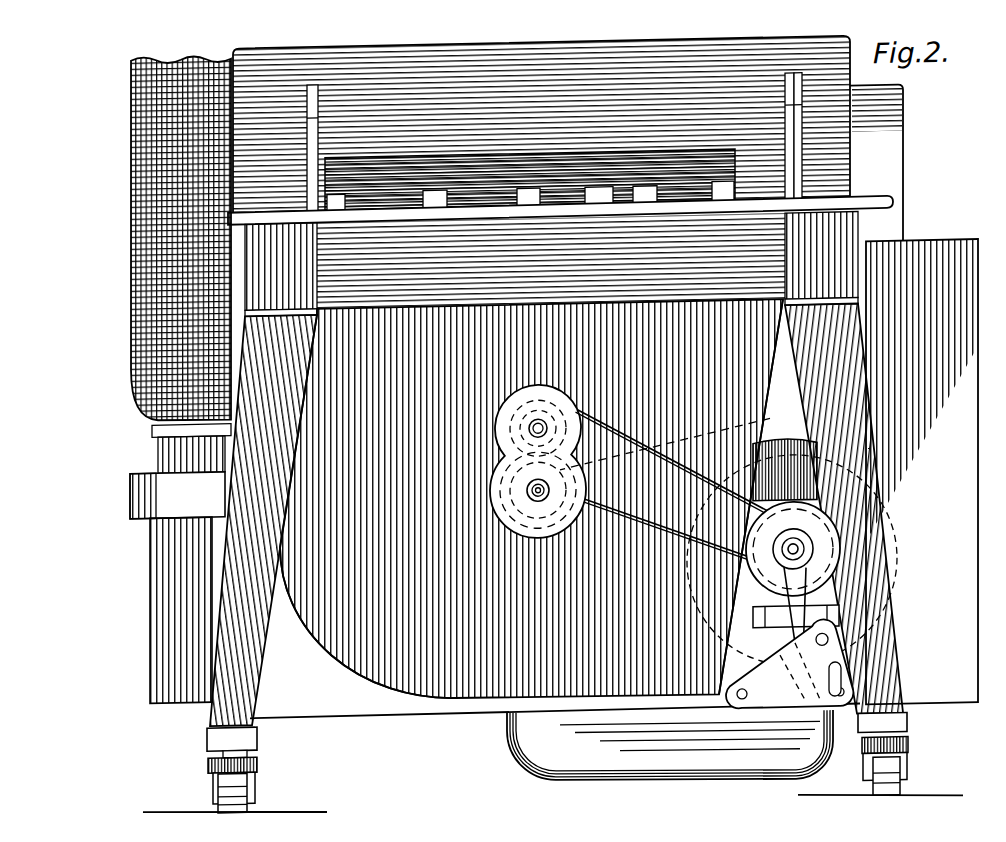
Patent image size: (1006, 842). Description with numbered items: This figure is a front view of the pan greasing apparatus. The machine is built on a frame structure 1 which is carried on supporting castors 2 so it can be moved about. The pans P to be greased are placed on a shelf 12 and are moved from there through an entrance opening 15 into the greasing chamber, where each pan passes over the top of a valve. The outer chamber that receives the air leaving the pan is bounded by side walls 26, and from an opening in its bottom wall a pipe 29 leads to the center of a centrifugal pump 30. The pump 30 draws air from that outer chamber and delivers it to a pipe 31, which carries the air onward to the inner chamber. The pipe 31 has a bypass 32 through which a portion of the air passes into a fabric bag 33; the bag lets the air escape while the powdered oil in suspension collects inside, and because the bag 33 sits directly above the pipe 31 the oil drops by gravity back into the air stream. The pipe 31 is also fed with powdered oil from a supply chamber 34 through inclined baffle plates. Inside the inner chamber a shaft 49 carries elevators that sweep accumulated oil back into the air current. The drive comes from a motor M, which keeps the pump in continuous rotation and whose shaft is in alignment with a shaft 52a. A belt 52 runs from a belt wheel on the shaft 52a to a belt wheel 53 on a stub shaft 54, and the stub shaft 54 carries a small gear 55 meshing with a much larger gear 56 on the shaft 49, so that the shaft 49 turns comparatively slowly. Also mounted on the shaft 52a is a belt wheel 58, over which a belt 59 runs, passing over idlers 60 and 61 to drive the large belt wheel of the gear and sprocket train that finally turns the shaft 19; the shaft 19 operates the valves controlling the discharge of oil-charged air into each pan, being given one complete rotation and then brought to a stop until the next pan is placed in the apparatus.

The frame structure 1 is at (835, 256).
The supporting castors 2 is at (230, 775).
The shelf 12 is at (875, 205).
The entrance opening 15 is at (688, 175).
The shaft 19 is at (491, 51).
The side walls 26 is at (348, 608).
The pipe 29 is at (543, 733).
The centrifugal pump 30 is at (786, 456).
The pipe 31 is at (145, 485).
The bypass 32 is at (157, 439).
The fabric bag 33 is at (129, 113).
The supply chamber 34 is at (149, 578).
The shaft 49 is at (537, 494).
The belt 52 is at (675, 437).
The shaft 52a is at (805, 550).
The belt wheel 53 is at (574, 416).
The stub shaft 54 is at (540, 420).
The gear 55 is at (750, 404).
The gear 56 is at (398, 668).
The belt wheel 58 is at (803, 555).
The belt 59 is at (766, 657).
The idler 60 is at (829, 646).
The idler 61 is at (850, 708).
The motor M is at (840, 591).
The pans P is at (668, 181).